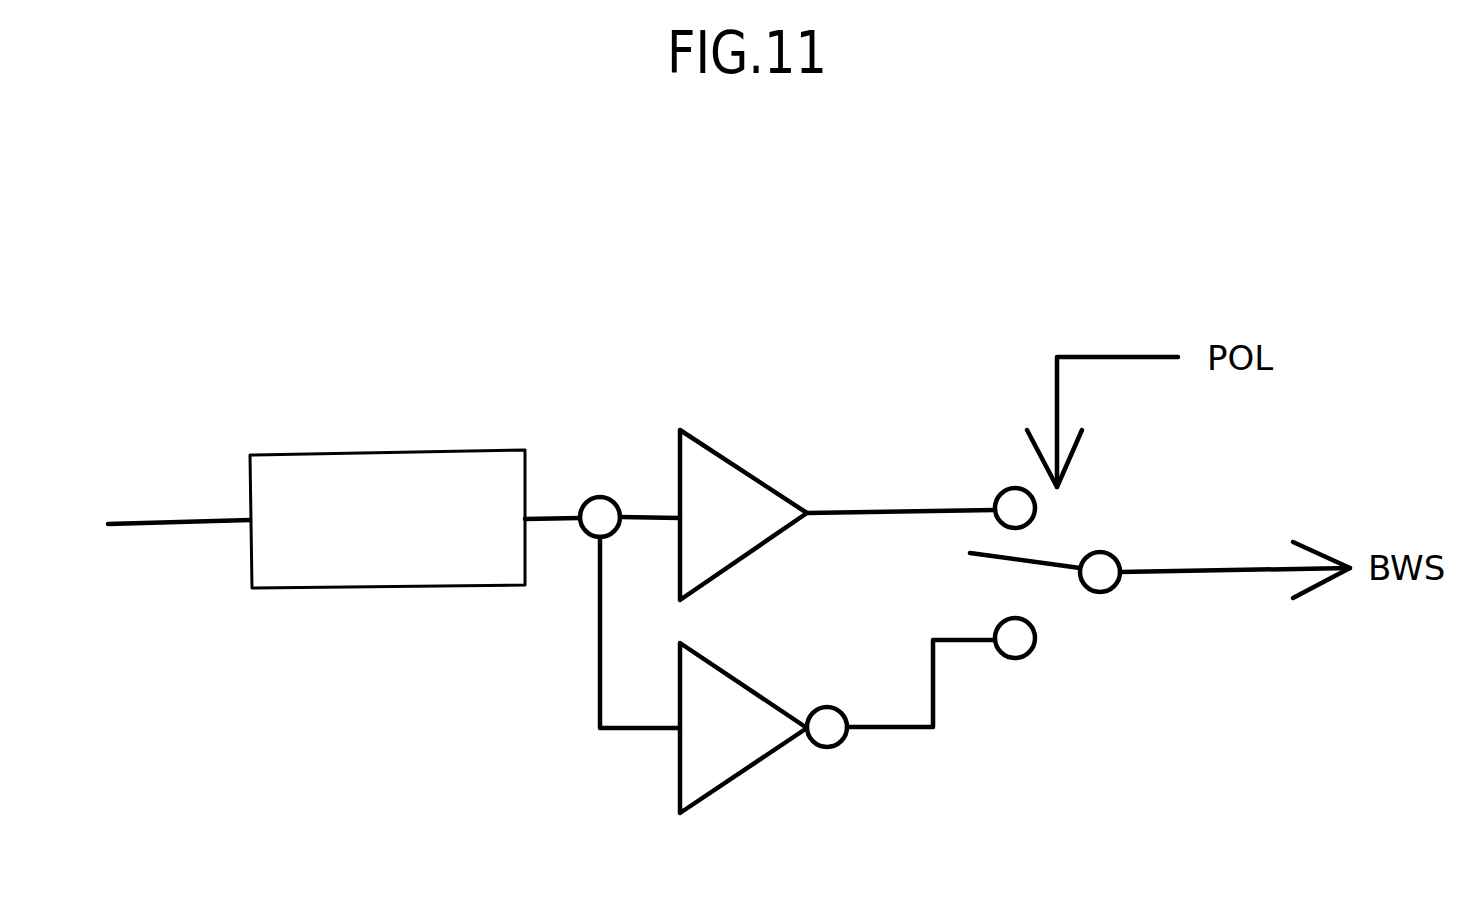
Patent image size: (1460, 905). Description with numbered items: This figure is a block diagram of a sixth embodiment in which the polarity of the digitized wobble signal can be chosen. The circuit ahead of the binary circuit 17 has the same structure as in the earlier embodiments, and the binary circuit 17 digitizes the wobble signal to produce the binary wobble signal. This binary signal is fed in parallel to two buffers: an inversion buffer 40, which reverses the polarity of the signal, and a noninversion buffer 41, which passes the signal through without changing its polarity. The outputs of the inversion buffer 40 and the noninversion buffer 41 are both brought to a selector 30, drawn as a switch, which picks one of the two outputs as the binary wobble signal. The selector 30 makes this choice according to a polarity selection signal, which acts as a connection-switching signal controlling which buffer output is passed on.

The binary circuit 17 is at (377, 587).
The noninversion buffer 41 is at (735, 457).
The inversion buffer 40 is at (723, 790).
The selector 30 is at (1112, 590).